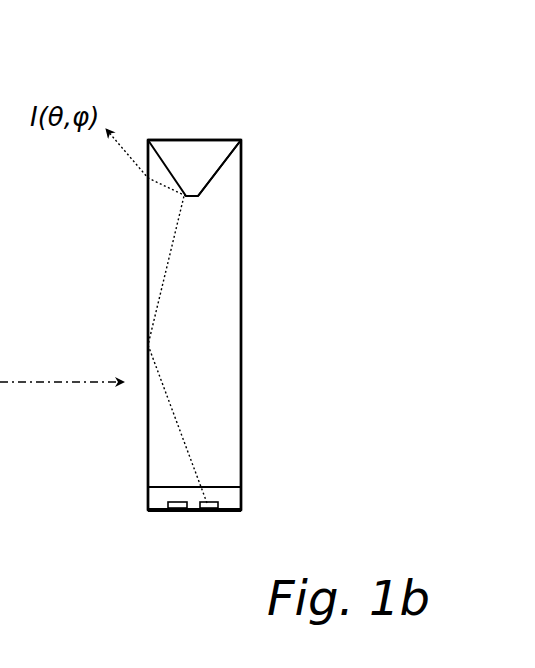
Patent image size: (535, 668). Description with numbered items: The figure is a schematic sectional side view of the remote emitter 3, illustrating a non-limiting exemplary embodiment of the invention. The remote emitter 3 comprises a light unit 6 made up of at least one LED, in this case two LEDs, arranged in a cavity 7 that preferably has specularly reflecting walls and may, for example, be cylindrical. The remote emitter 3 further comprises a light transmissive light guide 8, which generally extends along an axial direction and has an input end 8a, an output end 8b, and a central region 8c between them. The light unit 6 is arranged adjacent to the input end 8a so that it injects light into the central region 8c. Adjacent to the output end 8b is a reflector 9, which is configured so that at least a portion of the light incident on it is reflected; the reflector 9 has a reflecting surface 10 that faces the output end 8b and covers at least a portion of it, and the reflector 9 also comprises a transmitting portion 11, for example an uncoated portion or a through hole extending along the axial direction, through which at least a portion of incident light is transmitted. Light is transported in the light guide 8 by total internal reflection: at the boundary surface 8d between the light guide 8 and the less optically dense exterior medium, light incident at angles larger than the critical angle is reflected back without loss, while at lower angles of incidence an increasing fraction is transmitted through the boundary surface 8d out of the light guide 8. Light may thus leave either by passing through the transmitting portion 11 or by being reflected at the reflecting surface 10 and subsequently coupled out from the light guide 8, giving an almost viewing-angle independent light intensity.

The remote emitter 3 is at (322, 105).
The light unit 6 is at (190, 513).
The cavity 7 is at (157, 497).
The light guide 8 is at (126, 316).
The input end 8a is at (212, 484).
The output end 8b is at (234, 176).
The central region 8c is at (226, 306).
The boundary surface 8d is at (148, 432).
The reflector 9 is at (180, 152).
The reflecting surface 10 is at (200, 196).
The transmitting portion 11 is at (198, 196).